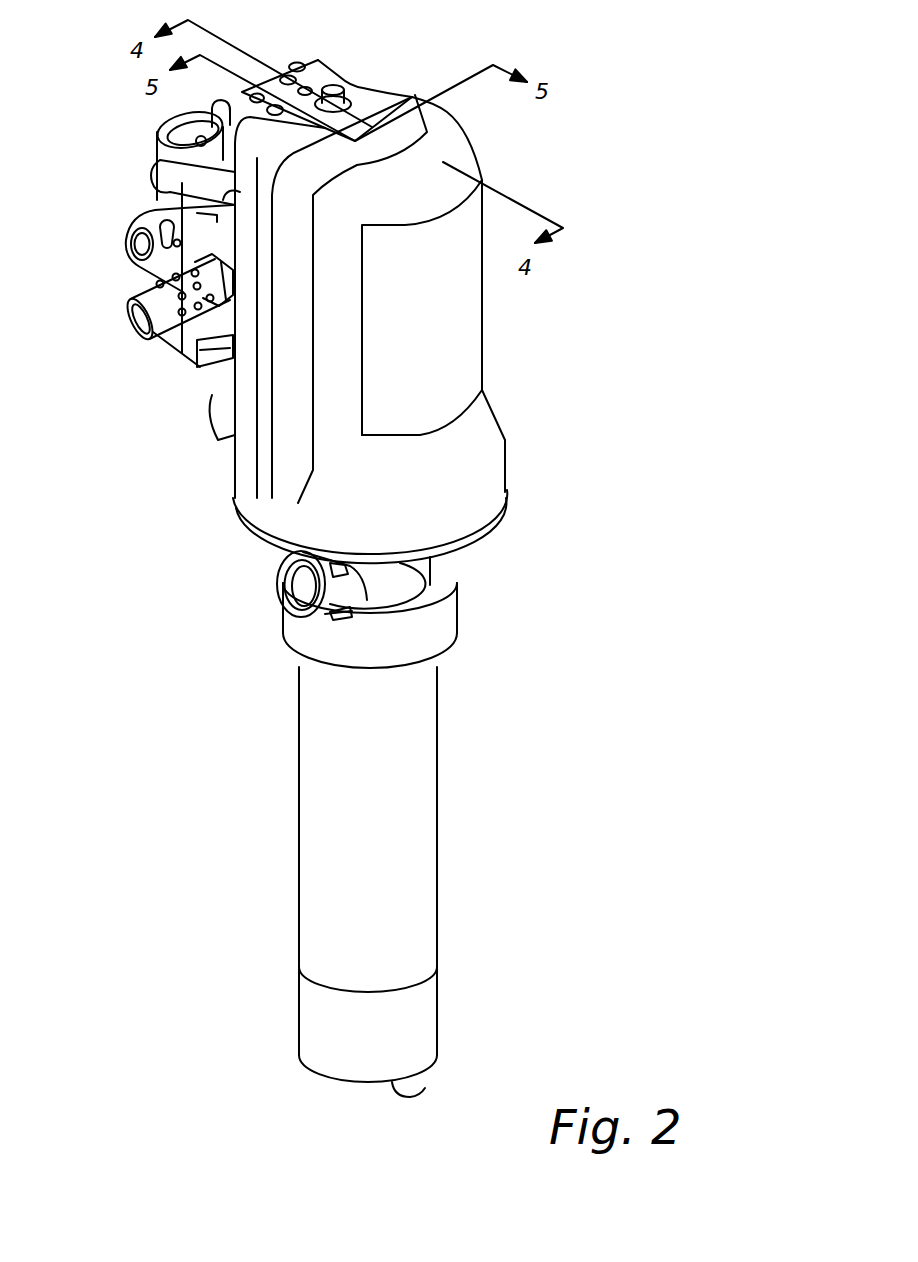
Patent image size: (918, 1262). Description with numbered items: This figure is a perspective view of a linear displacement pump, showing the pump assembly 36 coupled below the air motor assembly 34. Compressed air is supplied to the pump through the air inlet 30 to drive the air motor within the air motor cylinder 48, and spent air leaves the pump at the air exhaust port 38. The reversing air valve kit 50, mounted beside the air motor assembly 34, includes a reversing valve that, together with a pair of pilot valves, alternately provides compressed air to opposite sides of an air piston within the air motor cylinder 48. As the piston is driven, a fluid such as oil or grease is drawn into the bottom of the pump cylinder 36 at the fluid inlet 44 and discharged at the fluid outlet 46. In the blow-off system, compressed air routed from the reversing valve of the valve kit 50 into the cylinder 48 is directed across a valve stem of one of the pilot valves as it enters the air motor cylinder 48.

The air inlet 30 is at (138, 243).
The air motor assembly 34 is at (494, 133).
The pump assembly 36 is at (401, 819).
The air exhaust port 38 is at (129, 320).
The fluid inlet 44 is at (425, 1088).
The fluid outlet 46 is at (300, 590).
The air motor cylinder 48 is at (447, 313).
The reversing air valve kit 50 is at (130, 194).